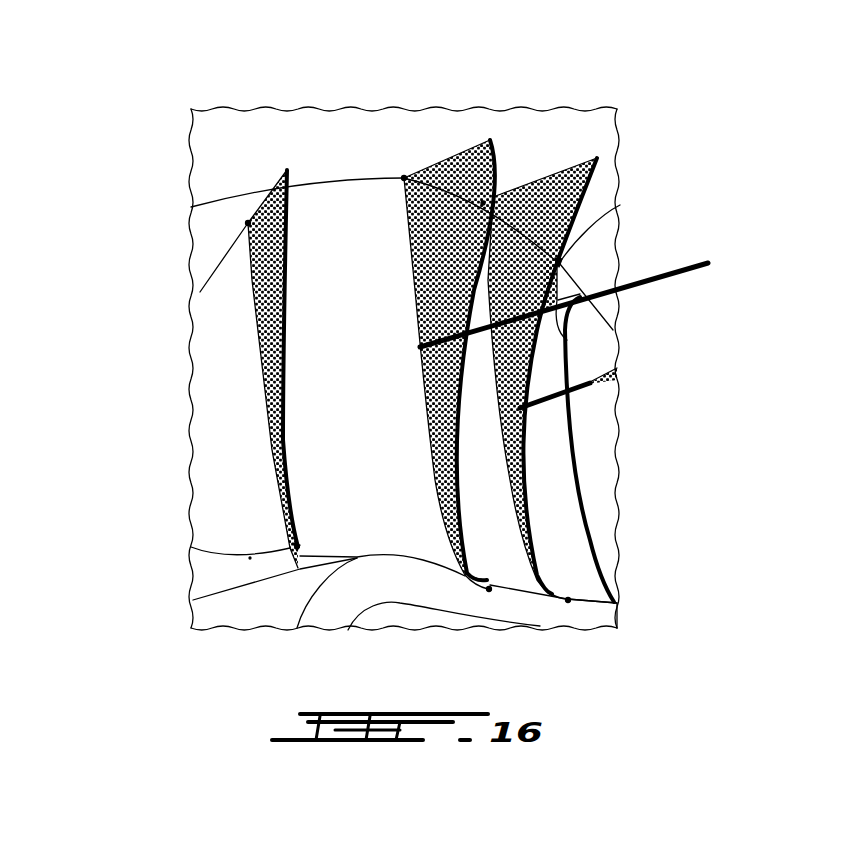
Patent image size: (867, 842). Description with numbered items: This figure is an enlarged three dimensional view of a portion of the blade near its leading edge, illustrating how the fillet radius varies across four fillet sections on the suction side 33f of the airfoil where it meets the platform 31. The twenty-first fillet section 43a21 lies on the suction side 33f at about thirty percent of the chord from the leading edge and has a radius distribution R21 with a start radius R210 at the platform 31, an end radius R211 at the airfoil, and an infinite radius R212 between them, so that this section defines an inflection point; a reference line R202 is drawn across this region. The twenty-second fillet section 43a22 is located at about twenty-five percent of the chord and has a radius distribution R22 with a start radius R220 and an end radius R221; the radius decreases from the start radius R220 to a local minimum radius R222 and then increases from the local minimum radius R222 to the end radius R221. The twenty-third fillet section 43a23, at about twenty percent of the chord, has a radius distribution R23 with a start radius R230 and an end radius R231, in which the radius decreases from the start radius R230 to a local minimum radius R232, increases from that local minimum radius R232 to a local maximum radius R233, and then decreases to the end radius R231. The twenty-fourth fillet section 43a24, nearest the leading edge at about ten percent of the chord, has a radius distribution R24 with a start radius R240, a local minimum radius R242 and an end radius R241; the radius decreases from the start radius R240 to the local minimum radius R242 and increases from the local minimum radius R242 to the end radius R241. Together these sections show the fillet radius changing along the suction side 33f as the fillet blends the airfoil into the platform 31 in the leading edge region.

The twenty-fourth fillet section 43a24 is at (178, 344).
The radius distribution R24 is at (266, 184).
The end radius R241 is at (246, 222).
The local minimum radius R242 is at (262, 558).
The start radius R240 is at (300, 547).
The twenty-third fillet section 43a23 is at (457, 310).
The radius distribution R23 is at (458, 134).
The end radius R231 is at (443, 157).
The local maximum radius R233 is at (485, 165).
The local minimum radius R232 is at (466, 577).
The start radius R230 is at (477, 588).
The twenty-second fillet section 43a22 is at (611, 332).
The radius distribution R22 is at (554, 157).
The end radius R221 is at (598, 157).
The local minimum radius R222 is at (536, 581).
The start radius R220 is at (568, 602).
The twenty-first fillet section 43a21 is at (678, 403).
The radius distribution R21 is at (583, 297).
The end radius R211 is at (558, 262).
The infinite radius R212 is at (567, 340).
The start radius R210 is at (615, 602).
The platform 31 is at (600, 617).
The reference line R202 is at (707, 267).
The suction side 33f is at (527, 132).